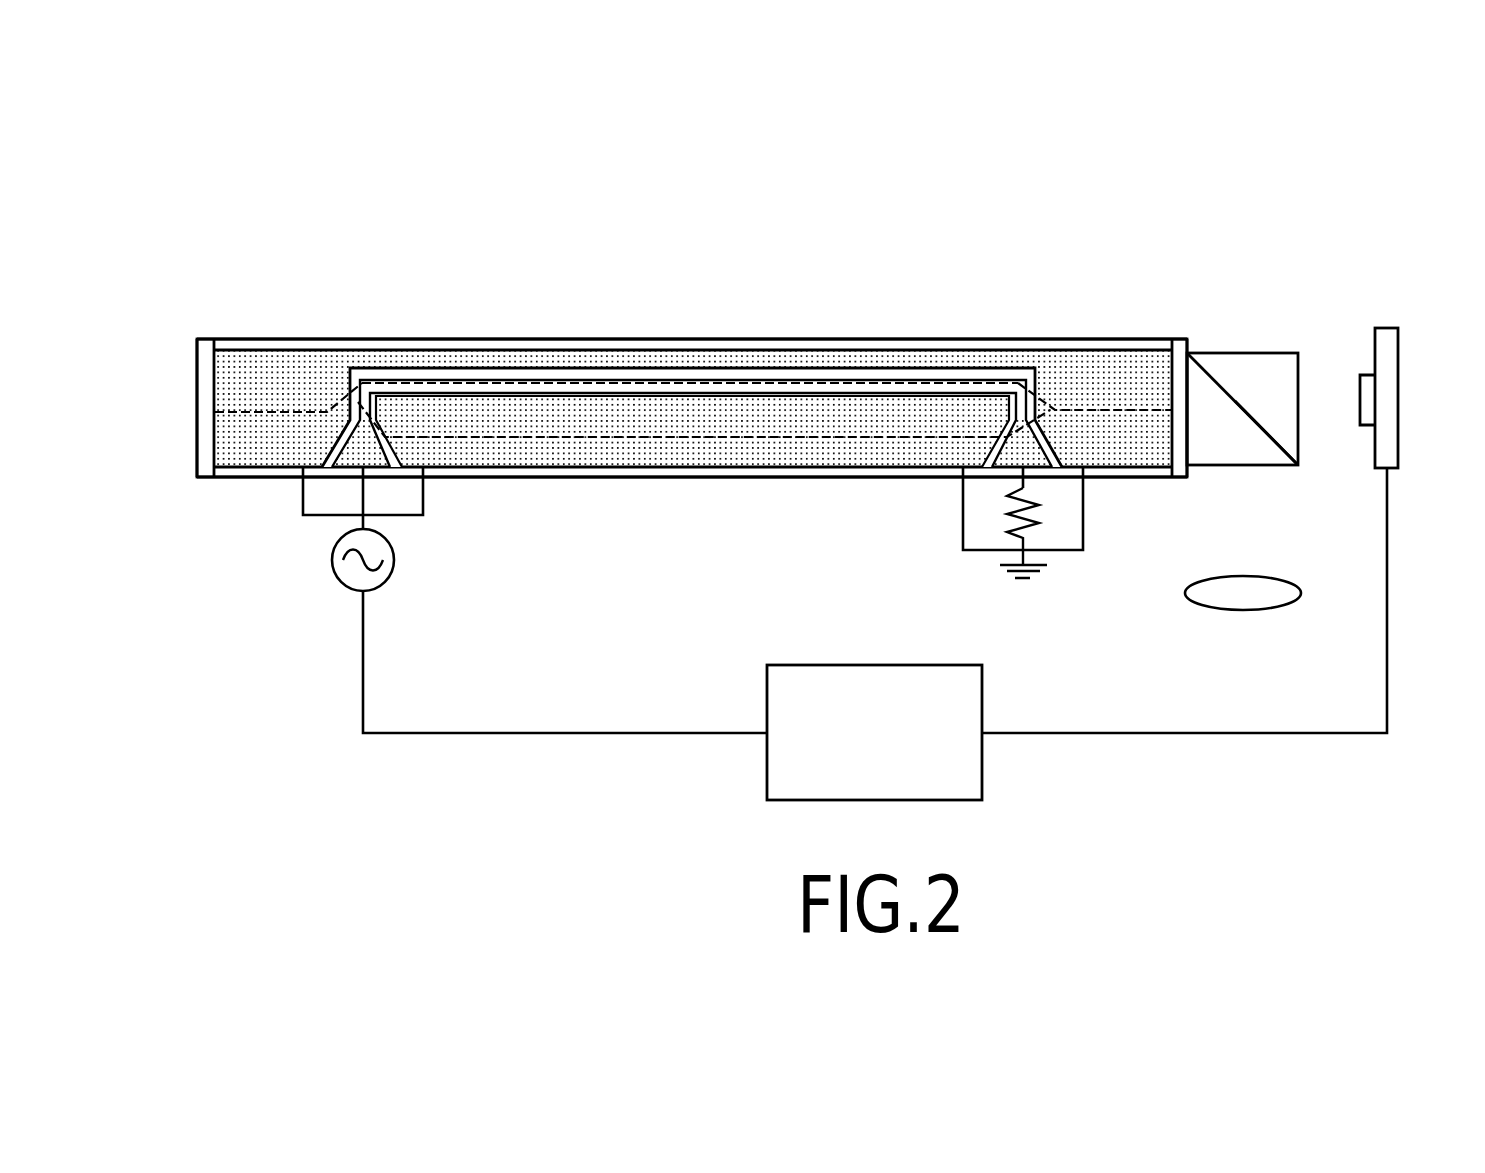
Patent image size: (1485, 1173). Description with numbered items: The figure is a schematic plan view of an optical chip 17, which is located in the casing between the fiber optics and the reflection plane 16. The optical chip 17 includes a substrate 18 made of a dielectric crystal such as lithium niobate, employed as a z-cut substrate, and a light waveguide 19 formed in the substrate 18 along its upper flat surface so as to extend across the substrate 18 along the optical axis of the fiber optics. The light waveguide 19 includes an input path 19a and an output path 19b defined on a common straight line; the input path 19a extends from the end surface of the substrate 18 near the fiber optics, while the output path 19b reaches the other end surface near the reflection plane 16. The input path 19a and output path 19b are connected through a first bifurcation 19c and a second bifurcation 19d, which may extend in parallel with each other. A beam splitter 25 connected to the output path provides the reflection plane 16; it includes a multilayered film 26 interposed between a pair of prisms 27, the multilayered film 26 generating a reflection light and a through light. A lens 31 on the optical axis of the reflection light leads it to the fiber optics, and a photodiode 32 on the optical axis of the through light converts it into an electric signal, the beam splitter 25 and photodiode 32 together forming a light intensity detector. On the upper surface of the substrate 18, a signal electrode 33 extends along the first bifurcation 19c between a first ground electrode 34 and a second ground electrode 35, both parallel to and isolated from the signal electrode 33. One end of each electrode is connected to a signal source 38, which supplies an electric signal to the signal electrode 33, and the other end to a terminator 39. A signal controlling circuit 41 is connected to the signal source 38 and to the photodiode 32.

The reflection plane 16 is at (1270, 440).
The optical chip 17 is at (398, 238).
The substrate 18 is at (318, 340).
The light waveguide 19 is at (930, 382).
The input path 19a is at (222, 410).
The output path 19b is at (1063, 408).
The first bifurcation 19c is at (490, 382).
The second bifurcation 19d is at (490, 440).
The beam splitter 25 is at (1287, 350).
The multilayered film 26 is at (1296, 462).
The prism 27 is at (1265, 352).
The lens 31 is at (1303, 593).
The photodiode 32 is at (1363, 373).
The signal electrode 33 is at (380, 440).
The first ground electrode 34 is at (700, 470).
The second ground electrode 35 is at (228, 470).
The signal source 38 is at (345, 585).
The terminator 39 is at (1033, 533).
The signal controlling circuit 41 is at (983, 690).